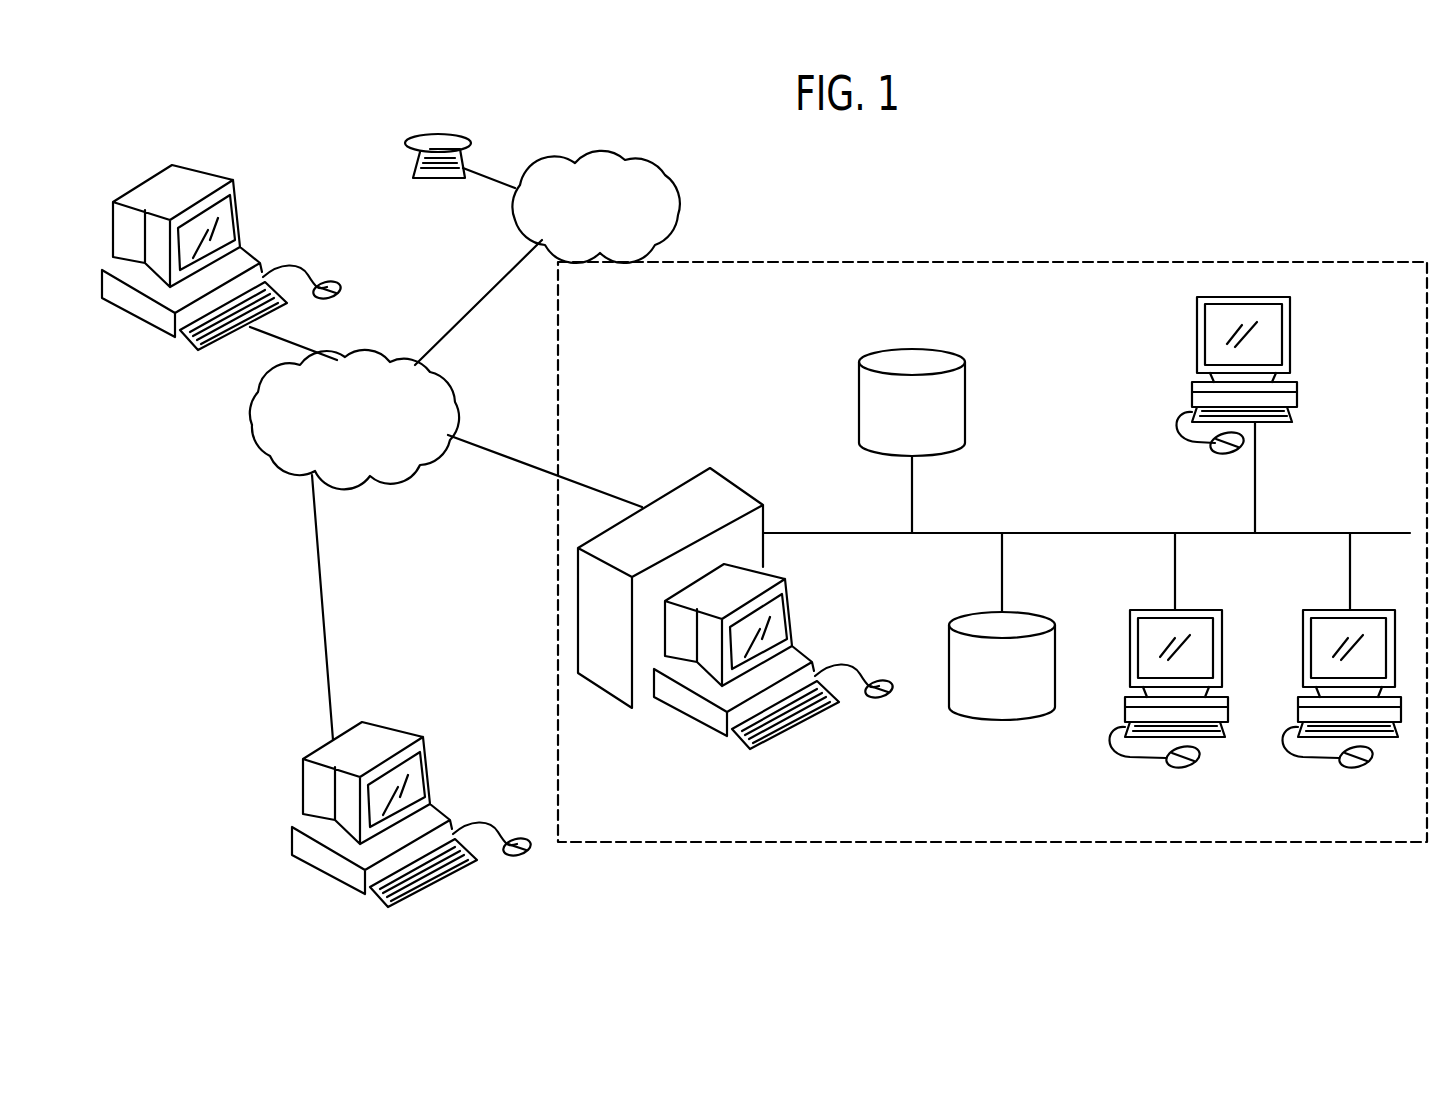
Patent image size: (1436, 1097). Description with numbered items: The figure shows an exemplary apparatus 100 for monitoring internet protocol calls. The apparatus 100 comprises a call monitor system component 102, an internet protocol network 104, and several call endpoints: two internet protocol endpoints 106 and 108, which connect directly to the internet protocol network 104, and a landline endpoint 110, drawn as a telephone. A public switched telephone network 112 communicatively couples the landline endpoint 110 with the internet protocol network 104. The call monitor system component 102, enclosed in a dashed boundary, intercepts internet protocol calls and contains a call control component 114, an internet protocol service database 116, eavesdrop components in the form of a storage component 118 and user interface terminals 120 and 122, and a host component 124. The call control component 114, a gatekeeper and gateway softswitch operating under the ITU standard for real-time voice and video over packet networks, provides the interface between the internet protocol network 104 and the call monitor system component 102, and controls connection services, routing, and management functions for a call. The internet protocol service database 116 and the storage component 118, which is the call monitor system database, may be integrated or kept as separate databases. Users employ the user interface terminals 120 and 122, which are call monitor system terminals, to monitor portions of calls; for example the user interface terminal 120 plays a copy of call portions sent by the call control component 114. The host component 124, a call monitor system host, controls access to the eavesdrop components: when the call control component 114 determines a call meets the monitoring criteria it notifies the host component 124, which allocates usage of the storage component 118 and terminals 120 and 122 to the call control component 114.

The apparatus 100 is at (262, 97).
The call monitor system component 102 is at (988, 262).
The internet protocol network 104 is at (367, 475).
The internet protocol endpoint 106 is at (382, 720).
The internet protocol endpoint 108 is at (142, 182).
The landline endpoint 110 is at (437, 132).
The public switched telephone network 112 is at (597, 158).
The call control component 114 is at (688, 717).
The internet protocol service database 116 is at (965, 400).
The storage component 118 is at (948, 665).
The user interface terminal 120 is at (1225, 647).
The user interface terminal 122 is at (1367, 603).
The host component 124 is at (1290, 332).